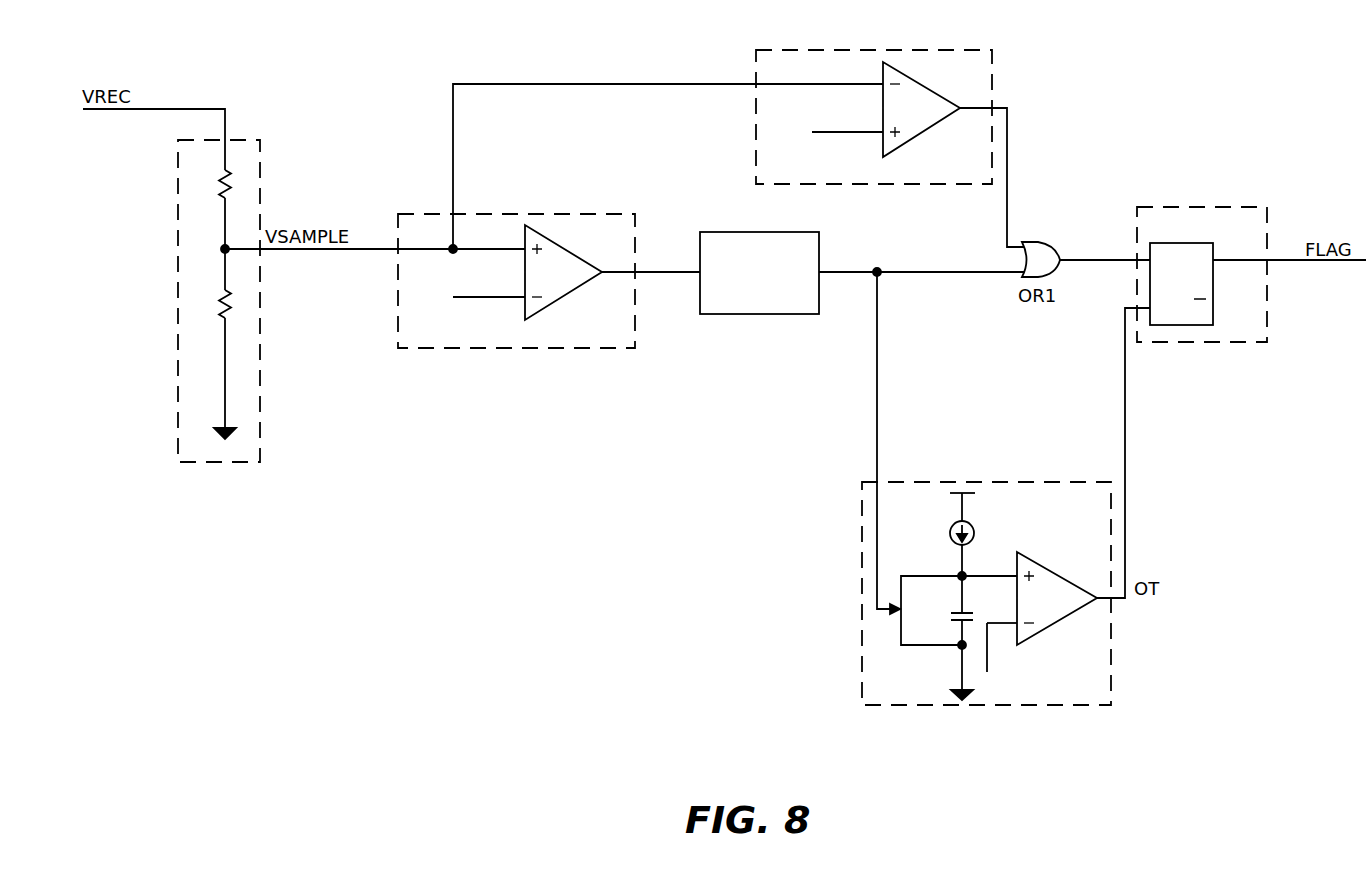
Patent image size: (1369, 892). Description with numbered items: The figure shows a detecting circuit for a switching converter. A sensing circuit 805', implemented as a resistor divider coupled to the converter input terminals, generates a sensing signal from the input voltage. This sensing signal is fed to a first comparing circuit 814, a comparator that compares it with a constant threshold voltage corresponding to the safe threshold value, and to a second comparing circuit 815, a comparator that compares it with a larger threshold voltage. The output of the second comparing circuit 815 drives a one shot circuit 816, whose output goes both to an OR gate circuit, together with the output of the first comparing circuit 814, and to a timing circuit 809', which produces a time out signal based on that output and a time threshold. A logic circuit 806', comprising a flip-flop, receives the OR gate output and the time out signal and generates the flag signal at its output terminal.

The sensing circuit 805' is at (203, 315).
The second comparing circuit 815 is at (447, 350).
The first comparing circuit 814 is at (805, 185).
The one shot circuit 816 is at (722, 315).
The logic circuit 806' is at (1202, 291).
The timing circuit 809' is at (961, 594).